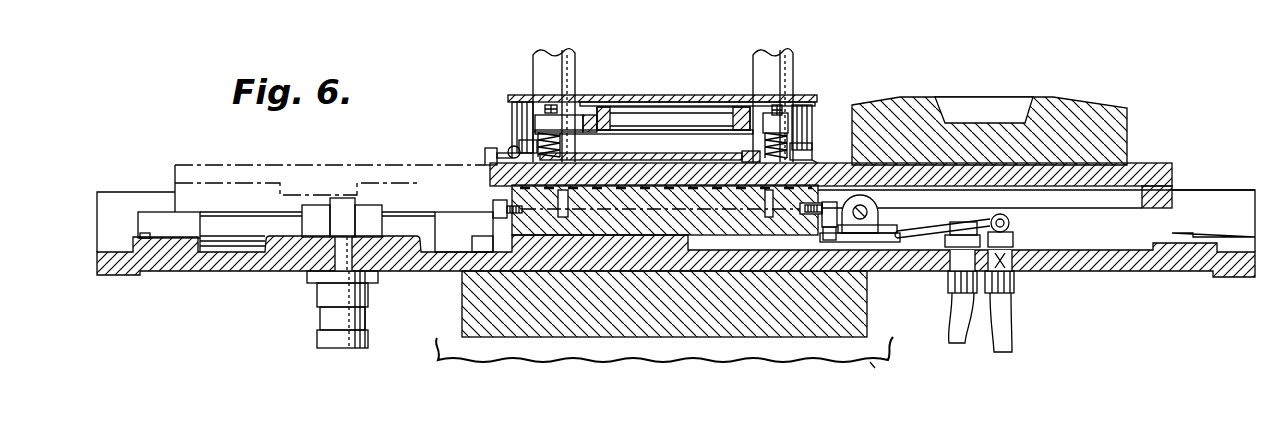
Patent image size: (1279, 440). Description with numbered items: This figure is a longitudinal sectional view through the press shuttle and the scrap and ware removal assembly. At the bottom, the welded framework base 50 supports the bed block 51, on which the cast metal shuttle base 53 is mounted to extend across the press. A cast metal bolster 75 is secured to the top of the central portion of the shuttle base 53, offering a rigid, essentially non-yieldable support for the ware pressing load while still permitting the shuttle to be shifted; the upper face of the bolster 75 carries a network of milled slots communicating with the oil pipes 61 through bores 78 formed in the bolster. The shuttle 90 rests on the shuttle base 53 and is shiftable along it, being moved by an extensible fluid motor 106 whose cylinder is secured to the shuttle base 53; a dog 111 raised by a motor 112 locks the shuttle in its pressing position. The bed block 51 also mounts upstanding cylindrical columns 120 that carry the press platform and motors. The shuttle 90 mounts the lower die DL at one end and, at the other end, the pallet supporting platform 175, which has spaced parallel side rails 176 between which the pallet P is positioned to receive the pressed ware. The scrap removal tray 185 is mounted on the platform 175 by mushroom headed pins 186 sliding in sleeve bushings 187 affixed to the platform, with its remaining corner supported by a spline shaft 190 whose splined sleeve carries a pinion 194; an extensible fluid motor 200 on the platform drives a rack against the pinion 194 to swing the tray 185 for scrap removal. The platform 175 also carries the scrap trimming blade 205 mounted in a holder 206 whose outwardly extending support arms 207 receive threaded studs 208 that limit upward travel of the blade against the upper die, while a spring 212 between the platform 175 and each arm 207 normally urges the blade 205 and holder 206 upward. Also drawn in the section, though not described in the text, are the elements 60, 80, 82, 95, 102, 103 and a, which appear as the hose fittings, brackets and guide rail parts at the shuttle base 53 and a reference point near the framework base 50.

The welded framework base 50 is at (589, 357).
The bed block 51 is at (462, 307).
The shuttle base 53 is at (1120, 271).
The hose 60 is at (1010, 325).
The oil pipes 61 is at (947, 233).
The bolster 75 is at (512, 195).
The bores 78 is at (815, 187).
The hose 80 is at (952, 317).
The adjusting screw bracket 82 is at (493, 222).
The shuttle 90 is at (1173, 168).
The guide rail 95 is at (435, 212).
The bracket base 102 is at (872, 220).
The pivot bracket 103 is at (872, 203).
The extensible fluid motor 106 is at (215, 246).
The dog 111 is at (338, 212).
The motor 112 is at (323, 322).
The cylindrical columns 120 is at (753, 73).
The pallet supporting platform 175 is at (490, 165).
The side rails 176 is at (747, 153).
The scrap removal tray 185 is at (797, 100).
The mushroom headed pins 186 is at (812, 113).
The sleeve bushings 187 is at (813, 148).
The spline shaft 190 is at (515, 118).
The pinion 194 is at (523, 147).
The extensible fluid motor 200 is at (485, 155).
The scrap trimming blade 205 is at (608, 110).
The holder 206 is at (730, 120).
The support arms 207 is at (790, 128).
The stud 208 is at (547, 108).
The spring 212 is at (563, 145).
The pallet P is at (657, 155).
The lower die DL is at (1128, 123).
The surface a is at (875, 368).